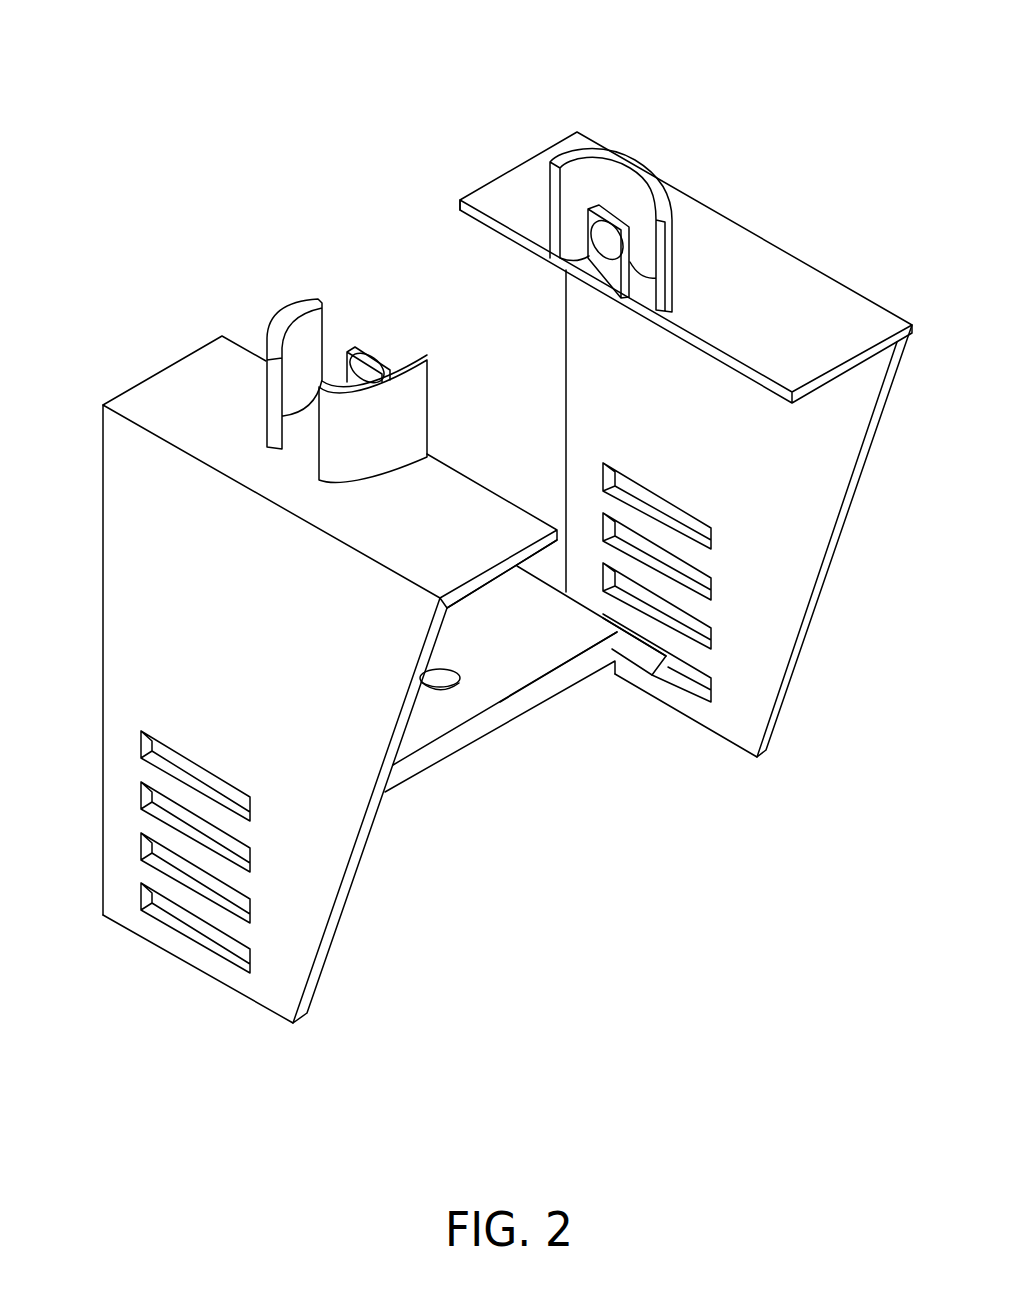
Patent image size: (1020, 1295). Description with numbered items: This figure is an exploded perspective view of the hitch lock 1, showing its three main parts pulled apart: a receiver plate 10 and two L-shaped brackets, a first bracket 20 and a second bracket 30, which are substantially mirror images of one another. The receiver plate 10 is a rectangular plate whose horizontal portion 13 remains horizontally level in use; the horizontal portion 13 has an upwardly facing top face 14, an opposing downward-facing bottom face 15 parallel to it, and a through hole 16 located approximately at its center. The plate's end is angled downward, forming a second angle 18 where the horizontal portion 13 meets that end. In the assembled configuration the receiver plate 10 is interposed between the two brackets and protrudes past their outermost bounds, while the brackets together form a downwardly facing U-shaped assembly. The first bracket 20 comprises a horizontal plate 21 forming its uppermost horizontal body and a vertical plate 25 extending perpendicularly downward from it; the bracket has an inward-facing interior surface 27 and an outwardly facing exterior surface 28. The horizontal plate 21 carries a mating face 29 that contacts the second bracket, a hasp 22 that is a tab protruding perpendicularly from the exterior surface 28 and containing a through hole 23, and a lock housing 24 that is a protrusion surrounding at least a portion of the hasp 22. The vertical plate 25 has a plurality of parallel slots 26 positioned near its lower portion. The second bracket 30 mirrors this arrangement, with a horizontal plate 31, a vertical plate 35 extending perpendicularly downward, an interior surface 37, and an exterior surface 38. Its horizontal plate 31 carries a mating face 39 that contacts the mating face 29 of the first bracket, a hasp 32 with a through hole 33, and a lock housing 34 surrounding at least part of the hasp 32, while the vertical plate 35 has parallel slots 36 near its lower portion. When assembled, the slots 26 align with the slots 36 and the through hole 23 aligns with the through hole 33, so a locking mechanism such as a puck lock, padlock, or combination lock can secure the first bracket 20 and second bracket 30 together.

The hitch lock 1 is at (774, 52).
The receiver plate 10 is at (500, 749).
The horizontal portion 13 is at (520, 705).
The top face 14 is at (413, 737).
The bottom face 15 is at (567, 687).
The through hole 16 is at (442, 670).
The second angle 18 is at (622, 652).
The first bracket 20 is at (351, 957).
The horizontal plate 21 is at (162, 382).
The hasp 22 is at (367, 351).
The through hole 23 is at (369, 373).
The lock housing 24 is at (283, 315).
The vertical plate 25 is at (325, 853).
The slots 26 is at (155, 895).
The interior surface 27 is at (376, 824).
The exterior surface 28 is at (262, 992).
The mating face 29 is at (523, 507).
The second bracket 30 is at (835, 617).
The horizontal plate 31 is at (792, 266).
The hasp 32 is at (605, 273).
The through hole 33 is at (604, 242).
The lock housing 34 is at (634, 199).
The vertical plate 35 is at (827, 495).
The slots 36 is at (705, 687).
The interior surface 37 is at (738, 693).
The exterior surface 38 is at (790, 692).
The mating face 39 is at (460, 208).